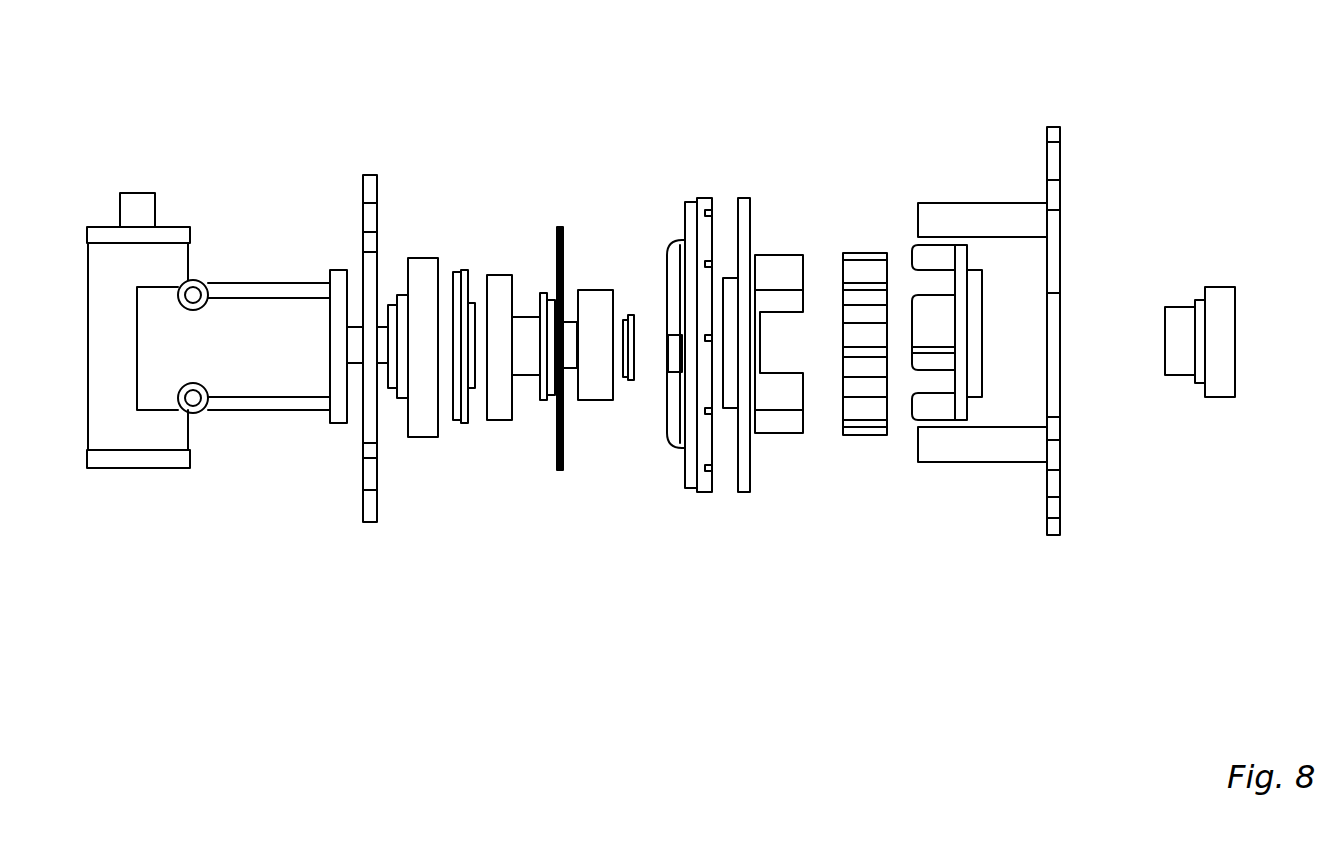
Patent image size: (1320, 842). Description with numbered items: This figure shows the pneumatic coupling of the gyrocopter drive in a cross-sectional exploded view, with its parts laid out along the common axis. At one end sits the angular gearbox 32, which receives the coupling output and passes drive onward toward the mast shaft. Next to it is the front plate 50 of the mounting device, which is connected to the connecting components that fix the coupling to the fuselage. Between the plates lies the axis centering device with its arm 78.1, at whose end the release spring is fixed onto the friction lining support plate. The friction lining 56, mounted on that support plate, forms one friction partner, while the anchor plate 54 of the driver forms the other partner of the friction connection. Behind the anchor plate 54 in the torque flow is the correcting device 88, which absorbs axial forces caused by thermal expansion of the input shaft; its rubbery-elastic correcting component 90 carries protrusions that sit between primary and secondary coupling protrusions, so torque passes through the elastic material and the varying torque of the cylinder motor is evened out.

The angular gearbox 32 is at (203, 184).
The front plate 50 is at (372, 175).
The arm 78.1 is at (560, 227).
The friction lining 56 is at (699, 197).
The anchor plate 54 is at (748, 198).
The correcting component 88 is at (887, 149).
The correcting component 90 is at (858, 437).